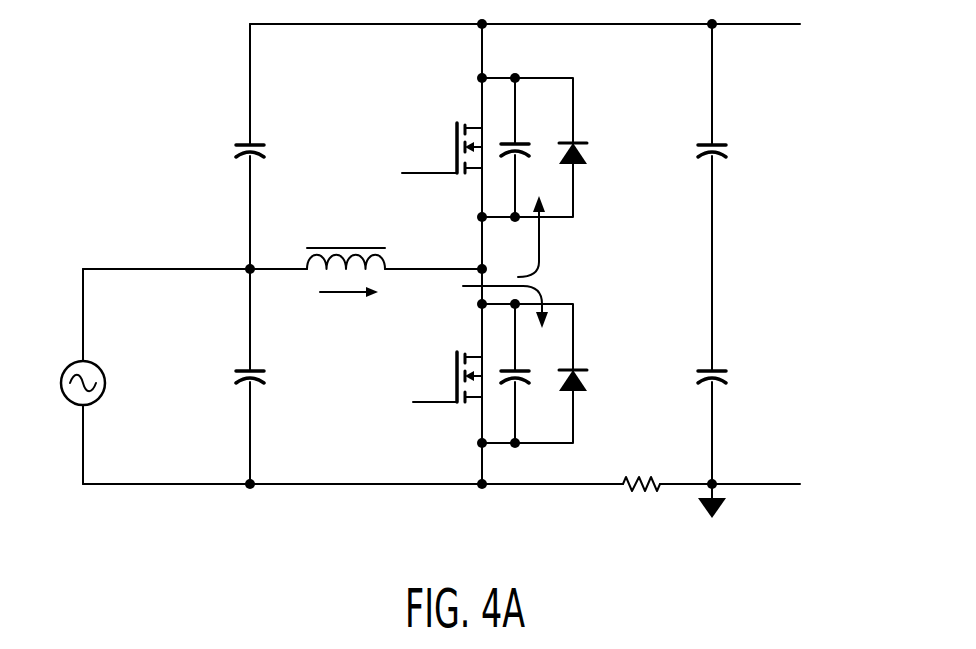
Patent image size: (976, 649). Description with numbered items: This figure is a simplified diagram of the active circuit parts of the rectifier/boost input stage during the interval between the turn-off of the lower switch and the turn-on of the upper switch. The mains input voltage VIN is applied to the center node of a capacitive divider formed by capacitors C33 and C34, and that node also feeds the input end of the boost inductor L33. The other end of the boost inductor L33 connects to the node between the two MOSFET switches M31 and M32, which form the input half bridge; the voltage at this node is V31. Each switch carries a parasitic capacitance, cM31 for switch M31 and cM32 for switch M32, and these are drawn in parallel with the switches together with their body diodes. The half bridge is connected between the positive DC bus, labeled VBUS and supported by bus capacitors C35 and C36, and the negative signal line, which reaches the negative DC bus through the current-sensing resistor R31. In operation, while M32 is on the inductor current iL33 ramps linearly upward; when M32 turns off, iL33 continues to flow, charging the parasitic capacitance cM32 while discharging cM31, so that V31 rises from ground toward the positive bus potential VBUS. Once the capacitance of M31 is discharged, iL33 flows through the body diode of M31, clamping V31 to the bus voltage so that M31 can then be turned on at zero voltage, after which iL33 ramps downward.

The input voltage VIN is at (66, 383).
The capacitor C33 is at (266, 137).
The capacitor C34 is at (263, 391).
The bus capacitor C35 is at (727, 113).
The bus capacitor C36 is at (726, 418).
The positive DC bus voltage VBUS is at (771, 62).
The boost inductor L33 is at (346, 244).
The inductor current iL33 is at (349, 308).
The node voltage V31 is at (503, 254).
The switch M31 is at (439, 148).
The switch M32 is at (439, 377).
The parasitic capacitance cM31 is at (522, 143).
The parasitic capacitance cM32 is at (522, 369).
The current-sensing resistor R31 is at (640, 470).